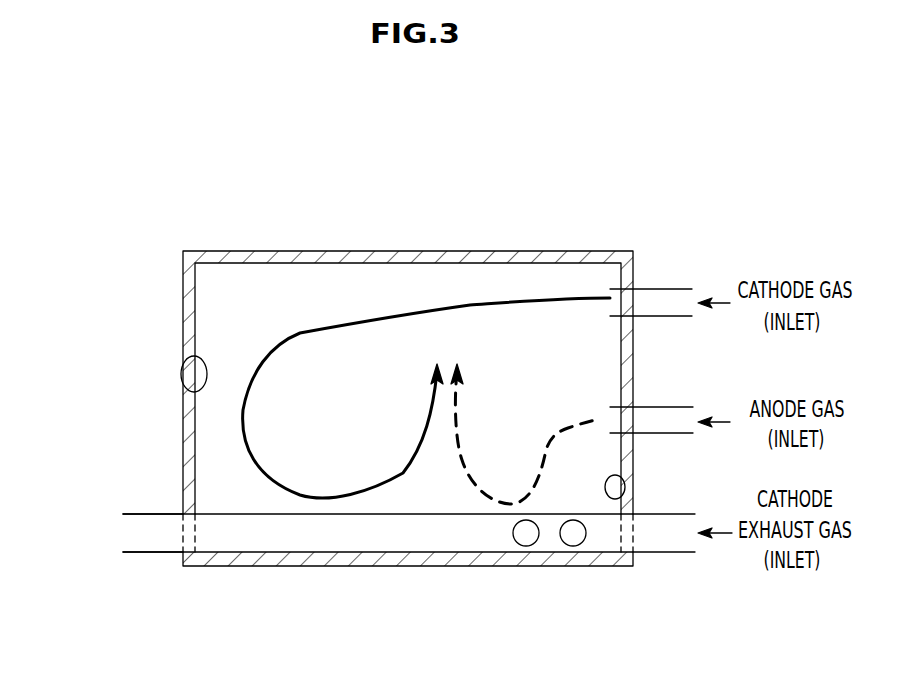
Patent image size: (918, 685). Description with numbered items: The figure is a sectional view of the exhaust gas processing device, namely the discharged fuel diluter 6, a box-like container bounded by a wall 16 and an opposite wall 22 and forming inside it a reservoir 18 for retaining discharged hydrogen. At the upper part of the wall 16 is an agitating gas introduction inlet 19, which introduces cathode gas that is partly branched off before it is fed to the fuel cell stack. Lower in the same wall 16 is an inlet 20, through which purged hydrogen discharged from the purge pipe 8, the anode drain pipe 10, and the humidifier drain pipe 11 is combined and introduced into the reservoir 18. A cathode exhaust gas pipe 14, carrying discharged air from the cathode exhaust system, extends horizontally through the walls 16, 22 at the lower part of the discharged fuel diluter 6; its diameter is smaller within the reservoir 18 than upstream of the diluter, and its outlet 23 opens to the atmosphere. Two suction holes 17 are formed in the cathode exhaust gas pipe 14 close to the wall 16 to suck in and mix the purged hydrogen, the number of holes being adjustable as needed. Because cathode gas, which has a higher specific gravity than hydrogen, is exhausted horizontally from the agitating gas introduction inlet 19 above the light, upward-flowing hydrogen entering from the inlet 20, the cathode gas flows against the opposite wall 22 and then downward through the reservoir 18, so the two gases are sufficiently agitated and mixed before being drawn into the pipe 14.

The discharged fuel diluter 6 is at (435, 231).
The purge pipe 8 is at (681, 400).
The anode drain pipe 10 is at (681, 400).
The humidifier drain pipe 11 is at (655, 407).
The cathode exhaust gas pipe 14 is at (672, 553).
The wall 16 is at (622, 492).
The suction holes 17 is at (566, 546).
The reservoir 18 is at (381, 387).
The agitating gas introduction inlet 19 is at (612, 288).
The inlet 20 is at (613, 407).
The opposite wall 22 is at (190, 392).
The outlet 23 is at (123, 552).